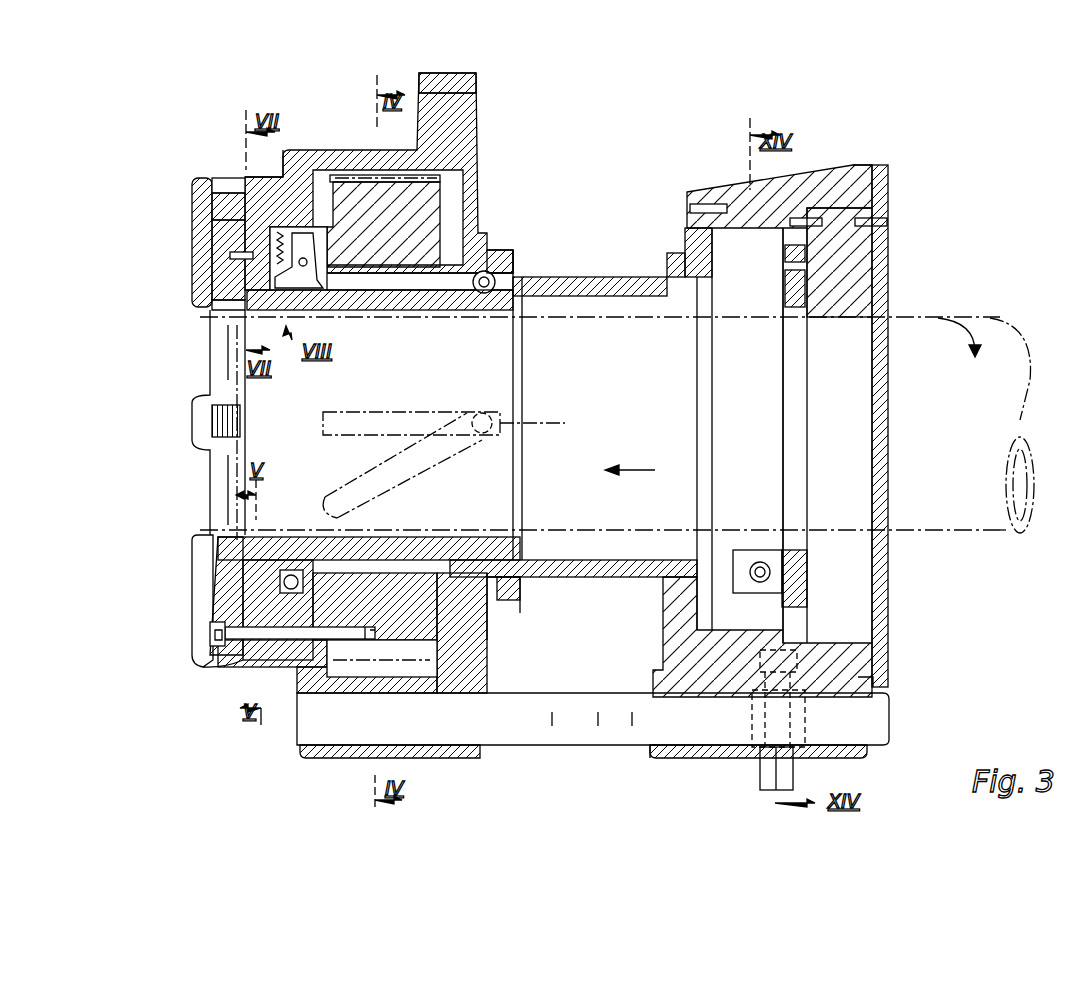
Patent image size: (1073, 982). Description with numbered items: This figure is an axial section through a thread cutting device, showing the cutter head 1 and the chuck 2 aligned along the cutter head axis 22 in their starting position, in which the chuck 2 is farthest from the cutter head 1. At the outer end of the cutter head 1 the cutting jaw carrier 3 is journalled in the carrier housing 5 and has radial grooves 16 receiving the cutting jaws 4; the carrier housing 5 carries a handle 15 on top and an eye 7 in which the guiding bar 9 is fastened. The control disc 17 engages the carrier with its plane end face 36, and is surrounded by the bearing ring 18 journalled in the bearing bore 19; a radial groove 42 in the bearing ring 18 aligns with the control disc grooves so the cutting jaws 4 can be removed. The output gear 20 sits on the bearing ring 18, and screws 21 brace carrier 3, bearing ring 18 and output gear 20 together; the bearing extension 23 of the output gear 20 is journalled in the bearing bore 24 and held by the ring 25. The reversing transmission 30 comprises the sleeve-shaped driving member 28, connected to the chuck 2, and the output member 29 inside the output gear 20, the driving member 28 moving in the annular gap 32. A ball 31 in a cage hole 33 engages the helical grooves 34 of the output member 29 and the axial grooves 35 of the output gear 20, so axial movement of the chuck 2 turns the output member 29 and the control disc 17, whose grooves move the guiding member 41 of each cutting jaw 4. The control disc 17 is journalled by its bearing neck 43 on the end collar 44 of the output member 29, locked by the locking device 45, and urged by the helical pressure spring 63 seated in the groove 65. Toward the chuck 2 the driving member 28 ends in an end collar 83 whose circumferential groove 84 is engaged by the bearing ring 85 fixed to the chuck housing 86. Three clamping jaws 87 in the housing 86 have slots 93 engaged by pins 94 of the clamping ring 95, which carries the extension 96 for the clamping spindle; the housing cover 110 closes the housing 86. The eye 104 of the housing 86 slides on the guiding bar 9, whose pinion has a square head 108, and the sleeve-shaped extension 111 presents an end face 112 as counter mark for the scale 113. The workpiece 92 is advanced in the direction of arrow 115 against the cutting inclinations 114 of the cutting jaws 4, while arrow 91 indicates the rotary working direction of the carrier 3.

The cutter head 1 is at (345, 122).
The chuck 2 is at (725, 140).
The cutting jaw carrier 3 is at (200, 580).
The cutting jaws 4 is at (200, 233).
The carrier housing 5 is at (350, 160).
The eye 7 is at (348, 758).
The guiding bar 9 is at (496, 745).
The handle 15 is at (465, 140).
The radial grooves 16 is at (225, 180).
The control disc 17 is at (230, 552).
The bearing ring 18 is at (230, 672).
The bearing bore 19 is at (285, 210).
The output gear 20 is at (420, 235).
The screws 21 is at (292, 640).
The cutter head axis 22 is at (555, 423).
The bearing extension 23 is at (500, 605).
The bearing bore 24 is at (460, 610).
The ring 25 is at (522, 598).
The driving member 28 is at (605, 277).
The output member 29 is at (395, 300).
The reversing transmission 30 is at (548, 262).
The ball 31 is at (484, 293).
The annular gap 32 is at (420, 282).
The cage hole 33 is at (505, 270).
The helical grooves 34 is at (420, 470).
The axial grooves 35 is at (318, 265).
The plane end face 36 is at (250, 595).
The guiding member 41 is at (222, 260).
The radial groove 42 is at (225, 205).
The bearing neck 43 is at (215, 633).
The end collar 44 is at (296, 560).
The locking device 45 is at (212, 306).
The helical pressure spring 63 is at (285, 560).
The groove 65 is at (340, 560).
The end collar 83 is at (715, 270).
The circumferential groove 84 is at (668, 600).
The bearing ring 85 is at (686, 232).
The housing 86 is at (700, 185).
The clamping jaws 87 is at (865, 270).
The arrow 91 is at (984, 369).
The workpiece 92 is at (975, 520).
The slot 93 is at (824, 285).
The pins 94 is at (785, 268).
The clamping ring 95 is at (808, 580).
The extension 96 is at (750, 550).
The eye 104 is at (845, 745).
The square head 108 is at (765, 780).
The housing cover 110 is at (890, 627).
The sleeve-shaped extension 111 is at (705, 758).
The end face 112 is at (652, 755).
The scale 113 is at (562, 730).
The cutting inclinations 114 is at (235, 320).
The arrow 115 is at (638, 460).